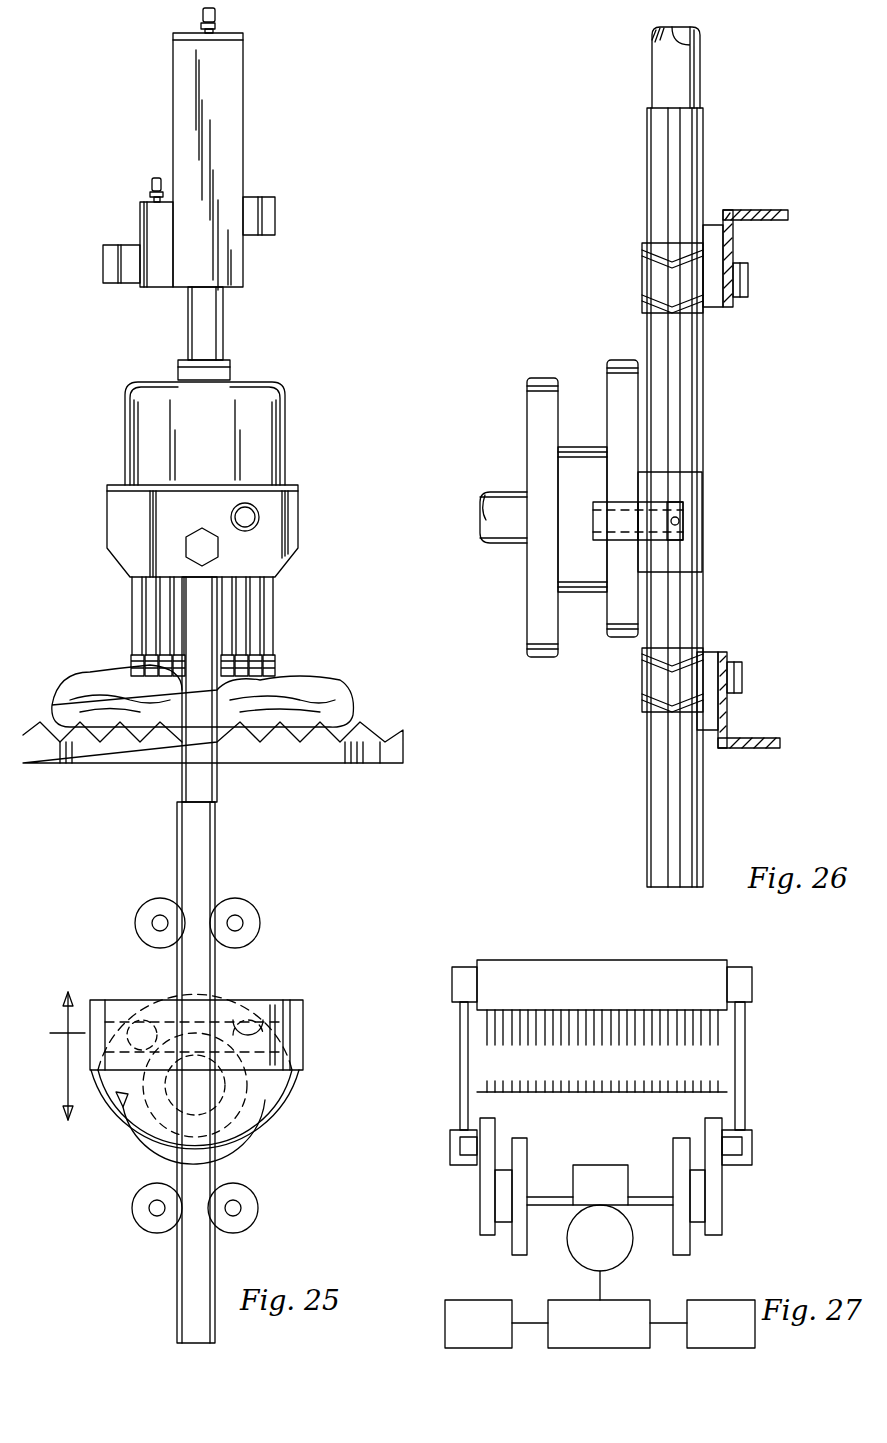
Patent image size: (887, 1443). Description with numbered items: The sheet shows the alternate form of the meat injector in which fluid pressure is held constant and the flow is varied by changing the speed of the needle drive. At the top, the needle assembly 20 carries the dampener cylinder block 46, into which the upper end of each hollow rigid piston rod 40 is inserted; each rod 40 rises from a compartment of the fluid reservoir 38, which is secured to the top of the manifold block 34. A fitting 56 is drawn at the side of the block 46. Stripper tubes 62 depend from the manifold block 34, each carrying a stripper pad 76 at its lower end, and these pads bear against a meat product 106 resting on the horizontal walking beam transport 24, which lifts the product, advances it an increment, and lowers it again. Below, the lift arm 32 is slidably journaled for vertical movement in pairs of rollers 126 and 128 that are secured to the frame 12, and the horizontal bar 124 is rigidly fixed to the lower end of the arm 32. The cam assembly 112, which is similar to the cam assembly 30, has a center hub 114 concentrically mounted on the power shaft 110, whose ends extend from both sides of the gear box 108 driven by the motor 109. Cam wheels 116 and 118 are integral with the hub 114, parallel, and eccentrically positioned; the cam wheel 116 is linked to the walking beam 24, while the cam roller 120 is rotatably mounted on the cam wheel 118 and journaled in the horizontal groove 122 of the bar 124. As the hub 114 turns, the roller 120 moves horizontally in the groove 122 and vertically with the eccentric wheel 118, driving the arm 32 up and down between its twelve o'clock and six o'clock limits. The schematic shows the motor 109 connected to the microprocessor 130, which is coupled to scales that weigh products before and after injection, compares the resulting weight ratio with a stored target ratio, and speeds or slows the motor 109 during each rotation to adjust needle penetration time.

In FIG. 26, the frame 12 is at (753, 210).
In FIG. 25, the needle assembly 20 is at (262, 70).
In FIG. 27, the needle assembly 20 is at (577, 958).
In FIG. 25, the horizontal walking beam transport 24 is at (347, 743).
In FIG. 27, the horizontal walking beam transport 24 is at (625, 1094).
In FIG. 25, the cam assembly 30 is at (110, 1165).
In FIG. 26, the cam assembly 30 is at (580, 372).
In FIG. 27, the cam assembly 30 is at (465, 1225).
In FIG. 25, the lift arm 32 is at (200, 615).
In FIG. 26, the lift arm 32 is at (703, 118).
In FIG. 27, the lift arm 32 is at (462, 1057).
In FIG. 25, the manifold block 34 is at (135, 555).
In FIG. 25, the fluid reservoir 38 is at (162, 397).
In FIG. 25, the hollow rigid piston rod 40 is at (197, 318).
In FIG. 25, the dampener cylinder block 46 is at (228, 96).
In FIG. 25, the valve 56 is at (150, 218).
In FIG. 25, the stripper tube 62 is at (130, 597).
In FIG. 27, the stripper tube 62 is at (513, 1020).
In FIG. 25, the stripper pad 76 is at (133, 650).
In FIG. 25, the fabric workpiece 106 is at (317, 698).
In FIG. 27, the gear box 108 is at (578, 1165).
In FIG. 27, the motor 109 is at (590, 1256).
In FIG. 26, the power shaft 110 is at (503, 543).
In FIG. 27, the power shaft 110 is at (552, 1206).
In FIG. 25, the cam assembly 112 is at (110, 1143).
In FIG. 26, the cam assembly 112 is at (545, 380).
In FIG. 27, the cam assembly 112 is at (478, 1210).
In FIG. 25, the center hub 114 is at (240, 1136).
In FIG. 26, the center hub 114 is at (568, 557).
In FIG. 25, the cam wheel 116 is at (280, 1128).
In FIG. 26, the cam wheel 116 is at (536, 598).
In FIG. 25, the cam wheel 118 is at (278, 1108).
In FIG. 26, the cam wheel 118 is at (622, 612).
In FIG. 25, the cam roller 120 is at (160, 1017).
In FIG. 26, the cam roller 120 is at (662, 505).
In FIG. 27, the cam roller 120 is at (462, 1138).
In FIG. 25, the horizontal groove 122 is at (270, 1007).
In FIG. 26, the horizontal groove 122 is at (685, 518).
In FIG. 25, the horizontal bar 124 is at (253, 1023).
In FIG. 26, the horizontal bar 124 is at (690, 480).
In FIG. 27, the horizontal bar 124 is at (752, 1162).
In FIG. 25, the rollers 126 is at (220, 1197).
In FIG. 26, the rollers 126 is at (695, 675).
In FIG. 25, the rollers 128 is at (160, 915).
In FIG. 26, the rollers 128 is at (645, 292).
In FIG. 27, the microprocessor 130 is at (625, 1300).